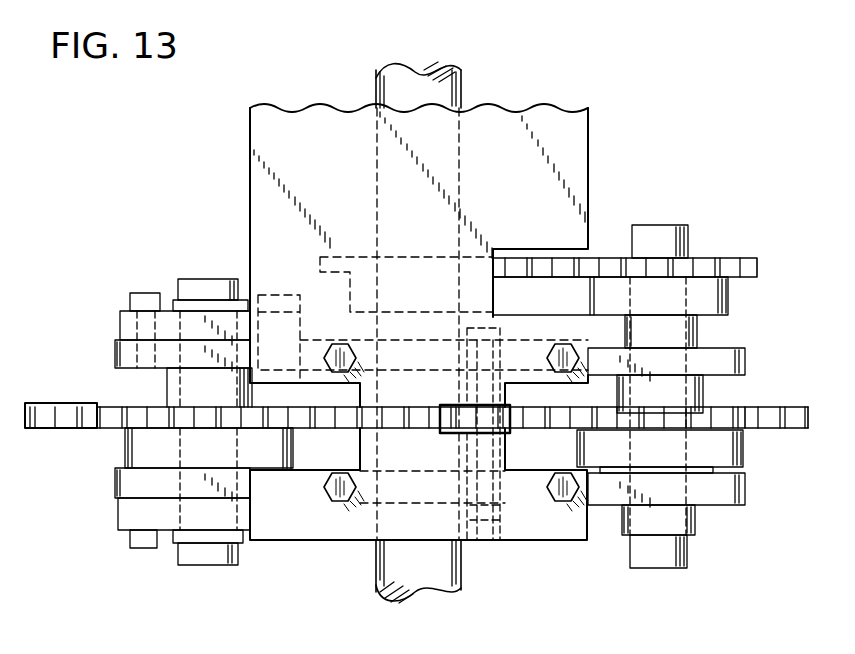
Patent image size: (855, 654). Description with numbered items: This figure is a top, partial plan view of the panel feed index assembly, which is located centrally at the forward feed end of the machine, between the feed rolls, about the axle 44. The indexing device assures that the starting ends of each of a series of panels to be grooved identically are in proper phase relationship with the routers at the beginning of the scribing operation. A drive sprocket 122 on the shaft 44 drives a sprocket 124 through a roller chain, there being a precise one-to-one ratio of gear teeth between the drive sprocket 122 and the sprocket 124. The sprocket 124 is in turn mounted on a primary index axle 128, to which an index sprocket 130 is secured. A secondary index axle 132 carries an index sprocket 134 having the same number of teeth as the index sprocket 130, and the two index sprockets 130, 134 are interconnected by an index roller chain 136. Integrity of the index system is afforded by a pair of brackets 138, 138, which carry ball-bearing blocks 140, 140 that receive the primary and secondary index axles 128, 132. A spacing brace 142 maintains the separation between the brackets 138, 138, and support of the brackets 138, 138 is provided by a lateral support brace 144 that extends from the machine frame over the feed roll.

The axle 44 is at (400, 86).
The drive sprocket 122 is at (410, 290).
The sprocket 124 is at (705, 300).
The primary index axle 128 is at (652, 235).
The index sprocket 130 is at (712, 446).
The secondary index axle 132 is at (240, 553).
The index sprocket 134 is at (155, 443).
The index roller chain 136 is at (760, 425).
The bracket 138 is at (130, 355).
The ball-bearing block 140 is at (188, 318).
The spacing brace 142 is at (458, 445).
The lateral support brace 144 is at (518, 176).